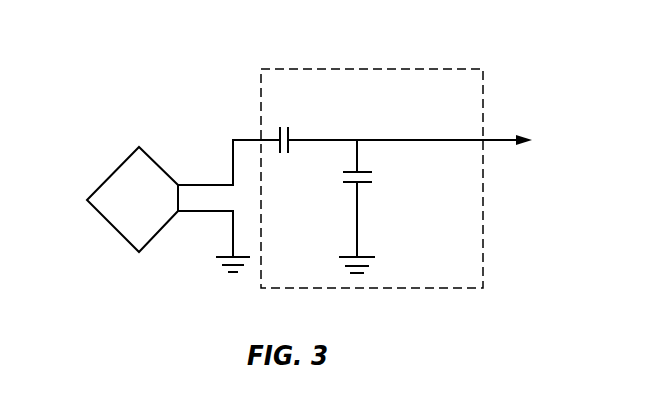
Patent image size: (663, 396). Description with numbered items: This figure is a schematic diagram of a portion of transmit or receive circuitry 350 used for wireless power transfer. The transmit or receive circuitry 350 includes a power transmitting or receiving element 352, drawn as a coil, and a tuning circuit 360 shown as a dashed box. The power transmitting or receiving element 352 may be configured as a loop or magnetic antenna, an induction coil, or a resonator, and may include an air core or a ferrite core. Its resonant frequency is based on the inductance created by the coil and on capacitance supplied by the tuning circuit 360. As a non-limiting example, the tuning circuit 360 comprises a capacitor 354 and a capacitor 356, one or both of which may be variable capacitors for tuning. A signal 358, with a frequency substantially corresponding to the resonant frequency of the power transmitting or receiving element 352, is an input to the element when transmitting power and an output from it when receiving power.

The transmit or receive circuitry 350 is at (157, 54).
The power transmitting or receiving element 352 is at (114, 173).
The capacitor 354 is at (290, 136).
The capacitor 356 is at (363, 183).
The signal 358 is at (389, 139).
The tuning circuit 360 is at (466, 68).